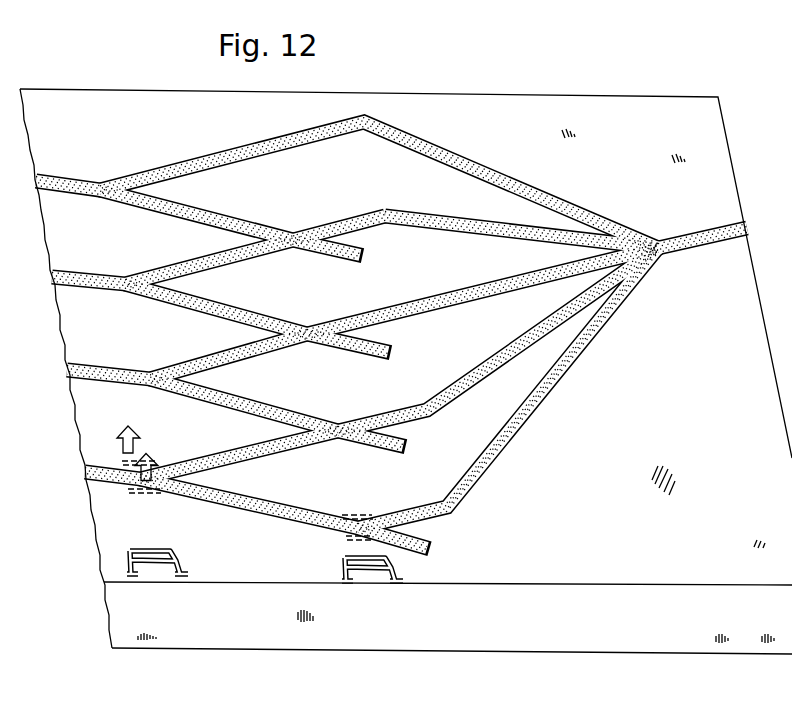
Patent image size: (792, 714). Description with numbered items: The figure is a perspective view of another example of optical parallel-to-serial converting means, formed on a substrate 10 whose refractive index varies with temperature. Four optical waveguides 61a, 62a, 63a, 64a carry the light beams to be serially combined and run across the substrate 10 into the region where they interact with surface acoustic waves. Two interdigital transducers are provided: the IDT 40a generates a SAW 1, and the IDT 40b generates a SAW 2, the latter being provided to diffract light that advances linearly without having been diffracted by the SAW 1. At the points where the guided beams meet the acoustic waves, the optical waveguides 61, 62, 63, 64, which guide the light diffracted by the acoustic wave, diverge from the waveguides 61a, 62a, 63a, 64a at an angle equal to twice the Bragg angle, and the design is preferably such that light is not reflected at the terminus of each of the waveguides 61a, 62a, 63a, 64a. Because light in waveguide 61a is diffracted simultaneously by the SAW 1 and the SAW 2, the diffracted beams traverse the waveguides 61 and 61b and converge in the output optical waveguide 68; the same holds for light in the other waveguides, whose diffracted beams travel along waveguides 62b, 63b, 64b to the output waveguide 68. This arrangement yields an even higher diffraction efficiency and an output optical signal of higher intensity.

The substrate 10 is at (589, 653).
The optical waveguide 61 is at (198, 160).
The optical waveguide 61a is at (138, 202).
The optical waveguide 61b is at (337, 226).
The optical waveguide 62 is at (158, 270).
The optical waveguide 62a is at (150, 297).
The optical waveguide 62b is at (392, 309).
The optical waveguide 63 is at (185, 362).
The optical waveguide 63a is at (188, 398).
The optical waveguide 63b is at (418, 406).
The optical waveguide 64 is at (224, 453).
The optical waveguide 64a is at (299, 522).
The optical waveguide 64b is at (444, 515).
The output optical waveguide 68 is at (693, 246).
The IDT 40a is at (189, 566).
The IDT 40b is at (402, 568).
The SAW 1 SAW1 is at (150, 497).
The SAW 2 SAW2 is at (372, 515).